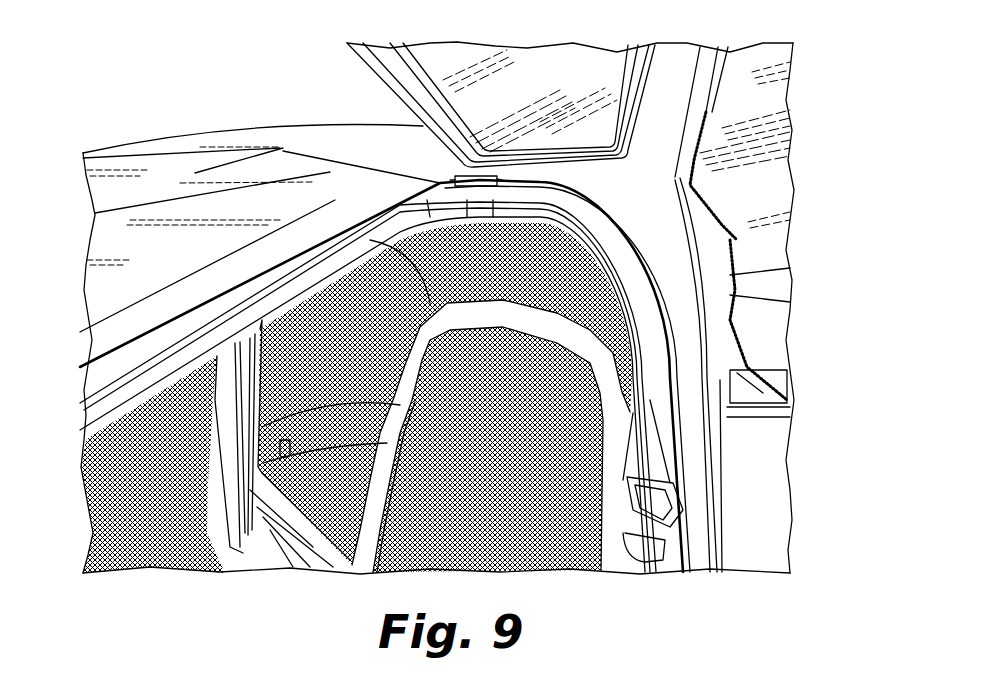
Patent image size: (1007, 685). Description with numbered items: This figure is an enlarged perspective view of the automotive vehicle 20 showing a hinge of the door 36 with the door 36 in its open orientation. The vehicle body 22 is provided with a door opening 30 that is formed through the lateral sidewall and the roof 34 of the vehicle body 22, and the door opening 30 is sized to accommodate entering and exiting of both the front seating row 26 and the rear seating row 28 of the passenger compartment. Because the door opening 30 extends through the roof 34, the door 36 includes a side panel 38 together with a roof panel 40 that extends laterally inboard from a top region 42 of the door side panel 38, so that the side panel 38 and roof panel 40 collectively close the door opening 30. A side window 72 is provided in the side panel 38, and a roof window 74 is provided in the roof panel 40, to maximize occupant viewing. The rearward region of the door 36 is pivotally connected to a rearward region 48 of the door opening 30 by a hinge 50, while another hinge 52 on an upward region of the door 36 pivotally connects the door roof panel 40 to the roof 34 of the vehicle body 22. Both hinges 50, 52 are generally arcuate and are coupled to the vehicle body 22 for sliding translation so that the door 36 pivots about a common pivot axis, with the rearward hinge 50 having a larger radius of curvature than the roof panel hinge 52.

The automotive vehicle 20 is at (193, 37).
The vehicle body 22 is at (330, 126).
The roof 34 is at (272, 126).
The door 36 is at (466, 93).
The roof panel 40 is at (388, 86).
The roof window 74 is at (546, 80).
The hinge 52 is at (497, 178).
The door opening 30 is at (540, 200).
The top region 42 is at (670, 90).
The side panel 38 is at (684, 175).
The side window 72 is at (765, 119).
The rear seating row 28 is at (567, 292).
The front seating row 26 is at (523, 449).
The hinge 50 is at (765, 395).
The rearward region 48 is at (755, 448).